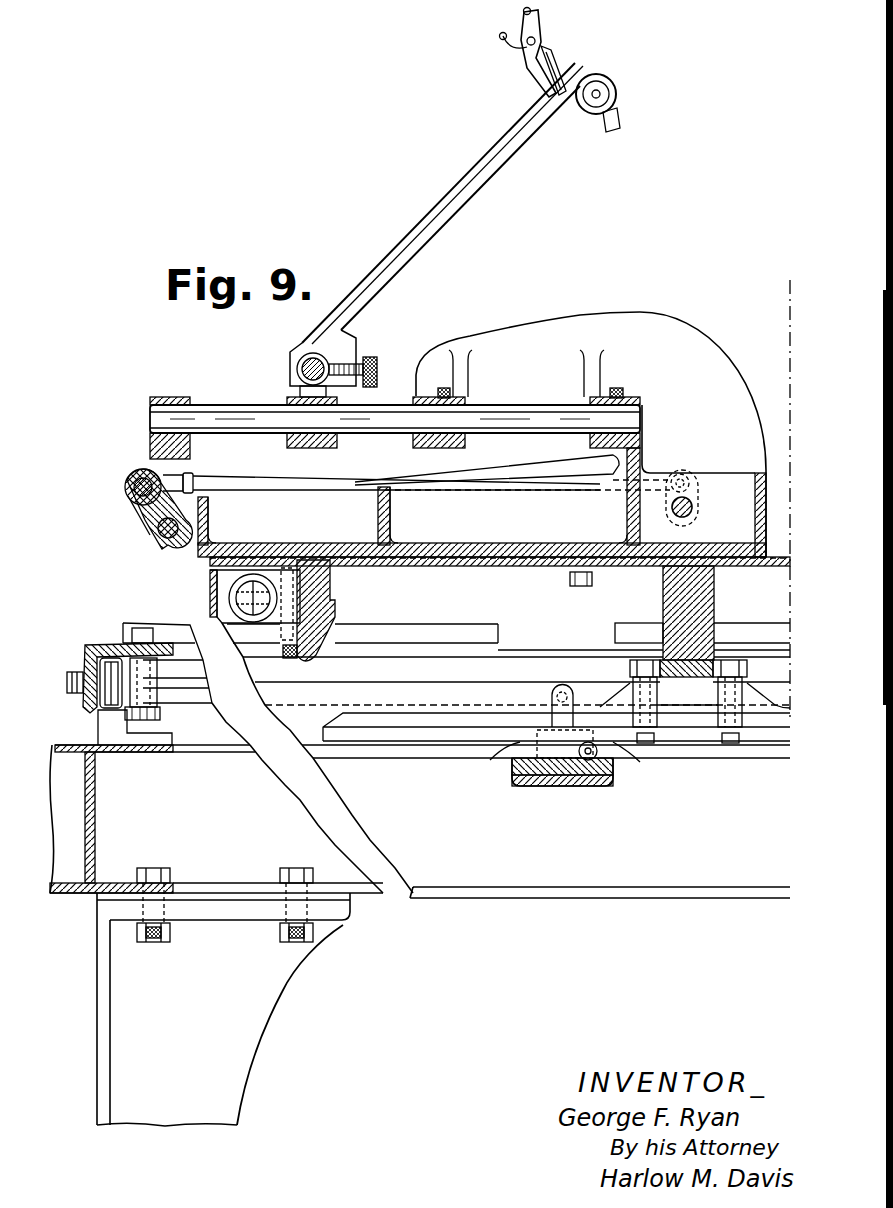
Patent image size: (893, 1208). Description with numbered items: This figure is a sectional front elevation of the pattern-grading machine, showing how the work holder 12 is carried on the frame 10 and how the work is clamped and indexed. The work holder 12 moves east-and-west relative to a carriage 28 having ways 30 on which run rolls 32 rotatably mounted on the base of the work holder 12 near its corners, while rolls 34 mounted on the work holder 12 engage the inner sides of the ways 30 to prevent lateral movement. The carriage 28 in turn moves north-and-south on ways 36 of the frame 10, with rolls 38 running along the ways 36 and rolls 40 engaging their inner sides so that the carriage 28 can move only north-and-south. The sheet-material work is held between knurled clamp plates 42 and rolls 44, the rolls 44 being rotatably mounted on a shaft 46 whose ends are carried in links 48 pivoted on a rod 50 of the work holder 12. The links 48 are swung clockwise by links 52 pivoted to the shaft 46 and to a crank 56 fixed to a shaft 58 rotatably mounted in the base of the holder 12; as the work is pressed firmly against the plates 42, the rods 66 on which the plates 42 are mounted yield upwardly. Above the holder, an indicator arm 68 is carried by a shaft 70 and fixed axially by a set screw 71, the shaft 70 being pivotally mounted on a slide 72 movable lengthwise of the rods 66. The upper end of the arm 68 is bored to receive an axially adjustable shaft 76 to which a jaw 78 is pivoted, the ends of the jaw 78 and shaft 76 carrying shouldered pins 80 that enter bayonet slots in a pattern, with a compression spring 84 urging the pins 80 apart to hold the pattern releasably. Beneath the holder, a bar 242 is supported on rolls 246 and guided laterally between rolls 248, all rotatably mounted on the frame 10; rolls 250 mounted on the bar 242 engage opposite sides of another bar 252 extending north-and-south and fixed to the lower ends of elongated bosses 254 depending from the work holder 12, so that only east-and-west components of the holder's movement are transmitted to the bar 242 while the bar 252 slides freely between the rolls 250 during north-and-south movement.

The frame 10 is at (487, 898).
The work holder 12 is at (670, 337).
The carriage 28 is at (93, 650).
The ways 30 is at (163, 622).
The rolls 32 is at (228, 585).
The rolls 34 is at (283, 632).
The ways 36 is at (100, 717).
The rolls 38 is at (112, 688).
The rolls 40 is at (160, 714).
The knurled clamp plates 42 is at (150, 445).
The rolls 44 is at (128, 480).
The shaft 46 is at (125, 493).
The links 48 is at (132, 512).
The rod 50 is at (155, 537).
The links 52 is at (258, 481).
The crank 56 is at (698, 480).
The shaft 58 is at (695, 505).
The rods 66 is at (205, 402).
The arm 68 is at (444, 230).
The shaft 70 is at (305, 366).
The set screw 71 is at (378, 359).
The slide 72 is at (296, 387).
The shaft 76 is at (577, 78).
The jaw 78 is at (530, 62).
The shouldered pins 80 is at (524, 12).
The compression spring 84 is at (545, 54).
The bar 242 is at (700, 742).
The rolls 246 is at (613, 762).
The rolls 248 is at (520, 742).
The rolls 250 is at (630, 669).
The bar 252 is at (700, 678).
The elongated bosses 254 is at (715, 604).